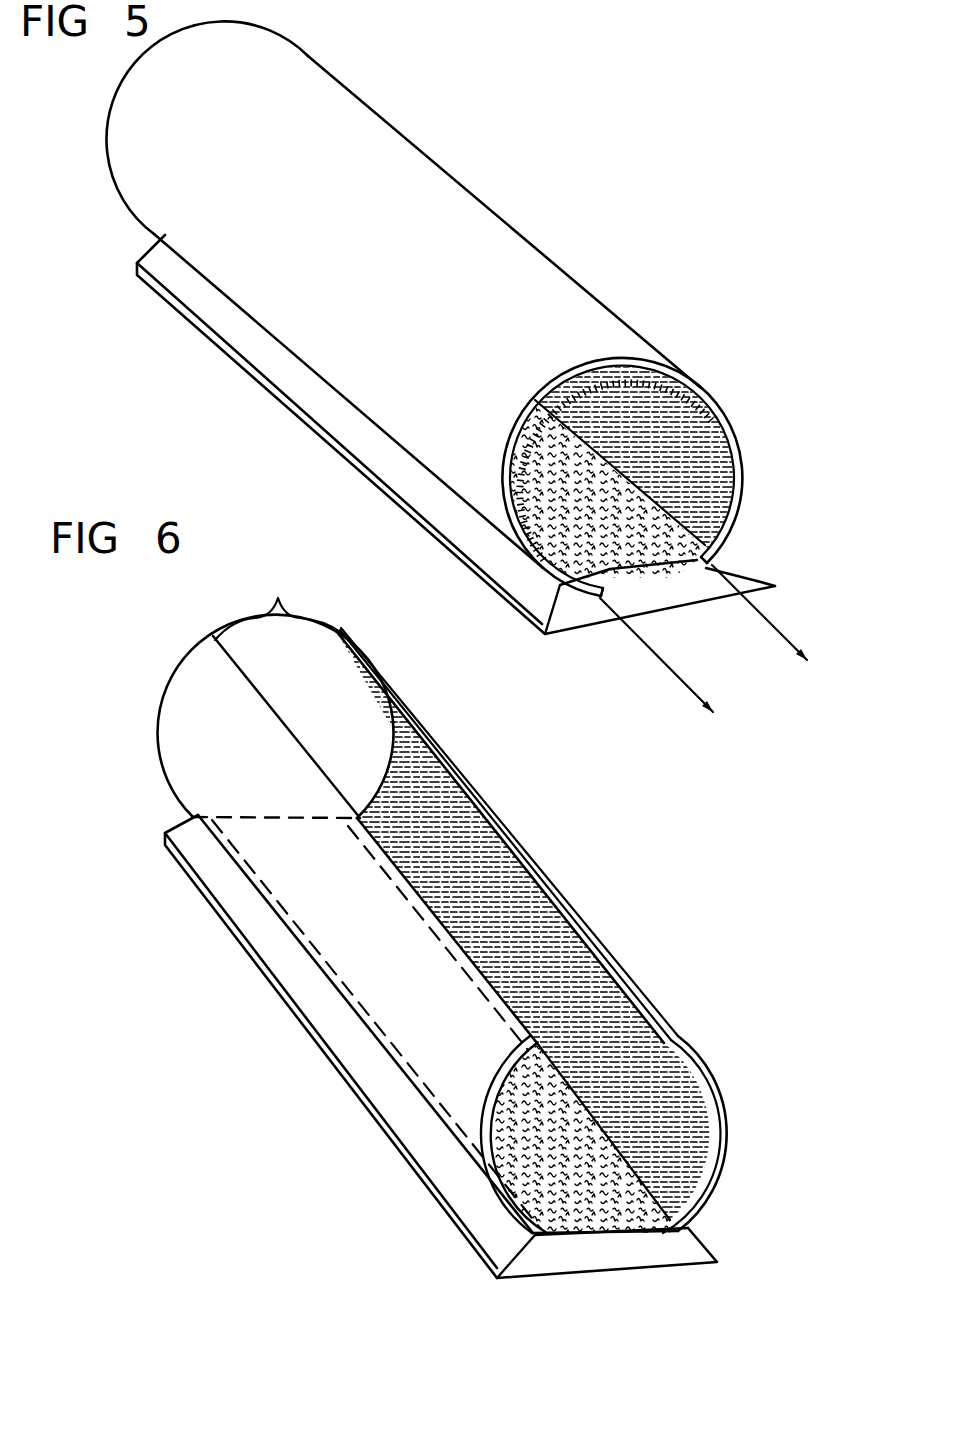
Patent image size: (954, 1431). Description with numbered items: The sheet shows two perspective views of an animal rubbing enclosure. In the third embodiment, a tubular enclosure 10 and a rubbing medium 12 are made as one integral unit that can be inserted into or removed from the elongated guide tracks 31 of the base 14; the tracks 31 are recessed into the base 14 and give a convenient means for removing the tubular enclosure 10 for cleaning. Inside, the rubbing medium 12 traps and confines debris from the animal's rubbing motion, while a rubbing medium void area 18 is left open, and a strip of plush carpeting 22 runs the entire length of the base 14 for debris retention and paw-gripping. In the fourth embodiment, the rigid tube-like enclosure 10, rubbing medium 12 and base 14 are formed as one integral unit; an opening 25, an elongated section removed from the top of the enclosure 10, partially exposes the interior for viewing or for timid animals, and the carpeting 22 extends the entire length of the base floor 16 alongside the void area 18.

In FIG. 5, the tubular enclosure 10 is at (640, 287).
In FIG. 6, the tubular enclosure 10 is at (638, 937).
In FIG. 5, the rubbing medium 12 is at (642, 388).
In FIG. 6, the rubbing medium 12 is at (678, 1147).
In FIG. 5, the base 14 is at (463, 537).
In FIG. 6, the base 14 is at (665, 1252).
In FIG. 5, the base floor 16 is at (637, 570).
In FIG. 6, the base floor 16 is at (597, 1233).
In FIG. 5, the rubbing medium void area 18 is at (717, 451).
In FIG. 6, the rubbing medium void area 18 is at (693, 1180).
In FIG. 5, the strip of carpeting 22 is at (640, 533).
In FIG. 6, the strip of carpeting 22 is at (635, 1216).
In FIG. 6, the opening 25 is at (277, 600).
In FIG. 5, the elongated guide tracks 31 is at (595, 648).